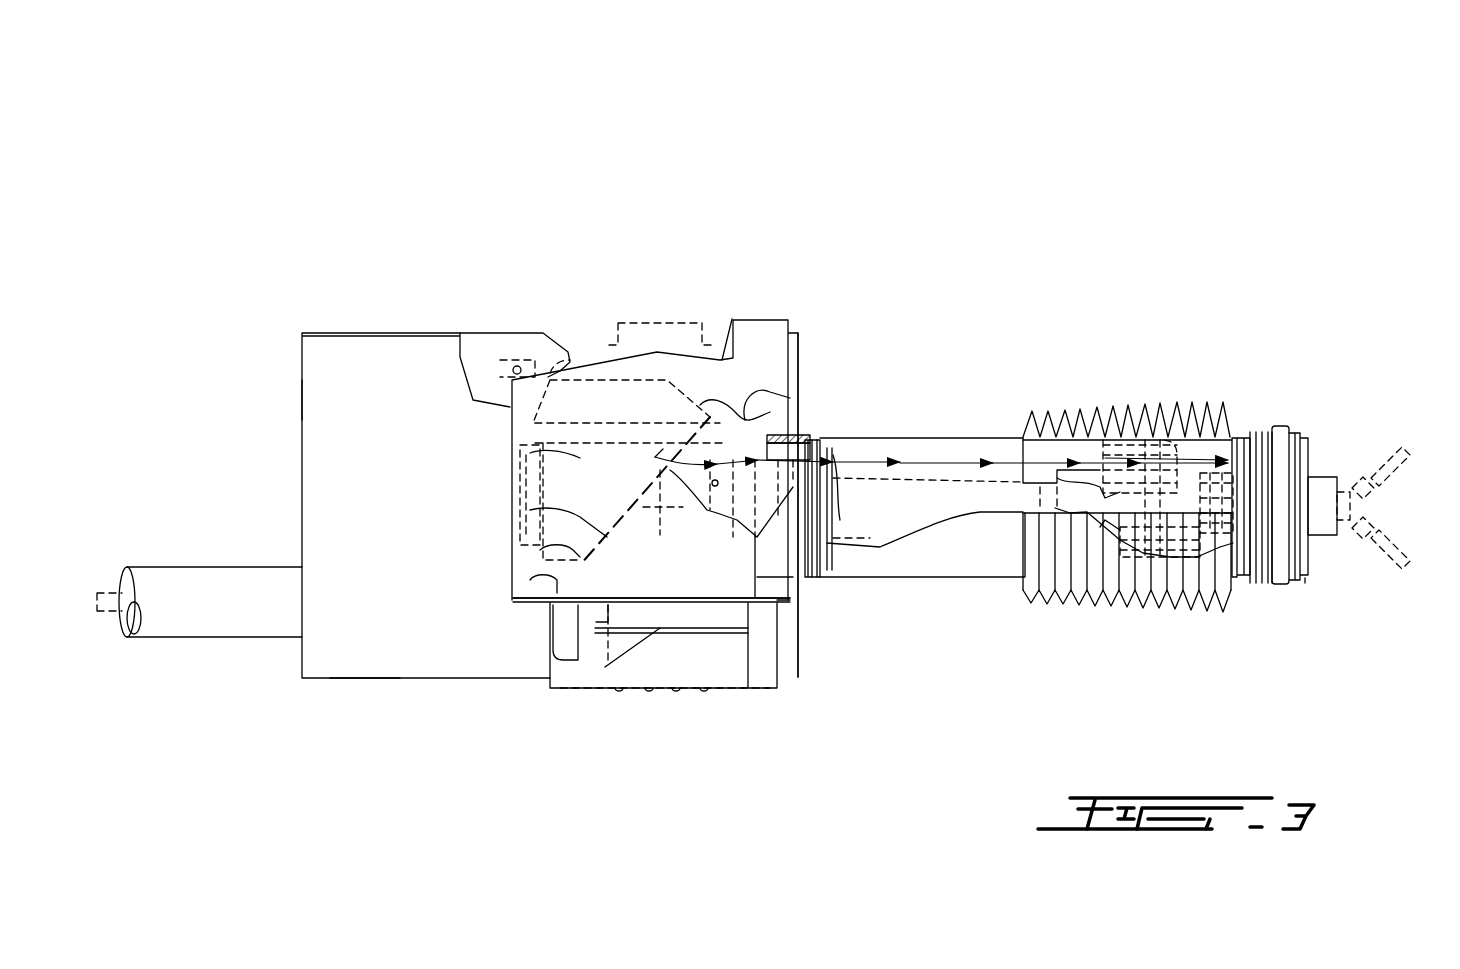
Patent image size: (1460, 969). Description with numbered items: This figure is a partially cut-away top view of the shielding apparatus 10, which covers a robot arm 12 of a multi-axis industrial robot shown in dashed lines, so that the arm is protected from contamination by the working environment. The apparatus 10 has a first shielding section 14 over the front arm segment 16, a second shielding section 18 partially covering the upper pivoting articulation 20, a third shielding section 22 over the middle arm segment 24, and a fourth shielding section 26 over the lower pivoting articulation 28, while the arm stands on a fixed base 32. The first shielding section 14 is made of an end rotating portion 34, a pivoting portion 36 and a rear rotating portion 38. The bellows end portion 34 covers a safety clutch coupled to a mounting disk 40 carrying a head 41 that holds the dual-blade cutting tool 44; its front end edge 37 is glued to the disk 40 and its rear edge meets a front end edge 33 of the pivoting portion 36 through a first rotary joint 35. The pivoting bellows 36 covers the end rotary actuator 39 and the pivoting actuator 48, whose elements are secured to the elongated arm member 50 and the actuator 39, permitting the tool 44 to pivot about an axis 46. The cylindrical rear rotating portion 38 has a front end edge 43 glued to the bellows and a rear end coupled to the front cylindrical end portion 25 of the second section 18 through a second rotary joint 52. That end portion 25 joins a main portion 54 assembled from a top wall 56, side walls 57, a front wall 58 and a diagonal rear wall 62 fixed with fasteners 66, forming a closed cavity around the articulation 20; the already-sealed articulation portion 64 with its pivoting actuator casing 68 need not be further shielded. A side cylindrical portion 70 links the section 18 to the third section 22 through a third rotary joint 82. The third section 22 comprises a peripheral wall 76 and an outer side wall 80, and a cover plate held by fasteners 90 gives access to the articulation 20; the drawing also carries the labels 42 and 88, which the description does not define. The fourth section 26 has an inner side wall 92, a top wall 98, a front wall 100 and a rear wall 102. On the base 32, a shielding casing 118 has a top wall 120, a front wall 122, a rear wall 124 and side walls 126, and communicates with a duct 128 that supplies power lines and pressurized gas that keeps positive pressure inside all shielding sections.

The shielding apparatus 10 is at (507, 287).
The robot arm 12 is at (612, 398).
The first shielding section 14 is at (944, 437).
The front arm segment 16 is at (888, 470).
The second shielding section 18 is at (748, 588).
The upper pivoting articulation 20 is at (792, 372).
The third shielding section 22 is at (676, 672).
The middle arm segment 24 is at (562, 690).
The front cylindrical end portion 25 is at (814, 600).
The fourth shielding section 26 is at (514, 610).
The lower pivoting articulation 28 is at (653, 328).
The fixed base 32 is at (356, 372).
The front end edge 33 is at (1233, 437).
The end rotating portion 34 is at (1279, 585).
The first rotary joint 35 is at (1238, 437).
The pivoting portion 36 is at (1086, 415).
The front end edge 37 is at (1298, 582).
The rear rotating portion 38 is at (984, 560).
The end rotary actuator 39 is at (1200, 577).
The mounting disk 40 is at (1306, 580).
The head 41 is at (1385, 525).
The connector 42 is at (1324, 477).
The front end edge 43 is at (1021, 437).
The tool 44 is at (1364, 470).
The axis 46 is at (1161, 440).
The pivoting actuator 48 is at (1120, 450).
The elongated arm member 50 is at (998, 505).
The second rotary joint 52 is at (822, 572).
The main portion 54 is at (598, 583).
The top wall 56 is at (677, 567).
The side wall 57 is at (727, 633).
The front wall 58 is at (788, 600).
The rear wall 62 is at (570, 510).
The articulation portion 64 is at (572, 457).
The fasteners 66 is at (558, 583).
The pivoting actuator casing 68 is at (584, 410).
The side cylindrical portion 70 is at (596, 660).
The peripheral wall 76 is at (617, 680).
The outer side wall 80 is at (582, 689).
The third rotary joint 82 is at (740, 637).
The bearing 88 is at (720, 636).
The fasteners 90 is at (648, 690).
The inner side wall 92 is at (784, 606).
The top wall 98 is at (755, 340).
The front wall 100 is at (730, 447).
The rear wall 102 is at (514, 472).
The shielding casing 118 is at (290, 455).
The top wall 120 is at (323, 360).
The front wall 122 is at (800, 355).
The rear wall 124 is at (300, 392).
The side wall 126 is at (362, 680).
The duct 128 is at (206, 640).